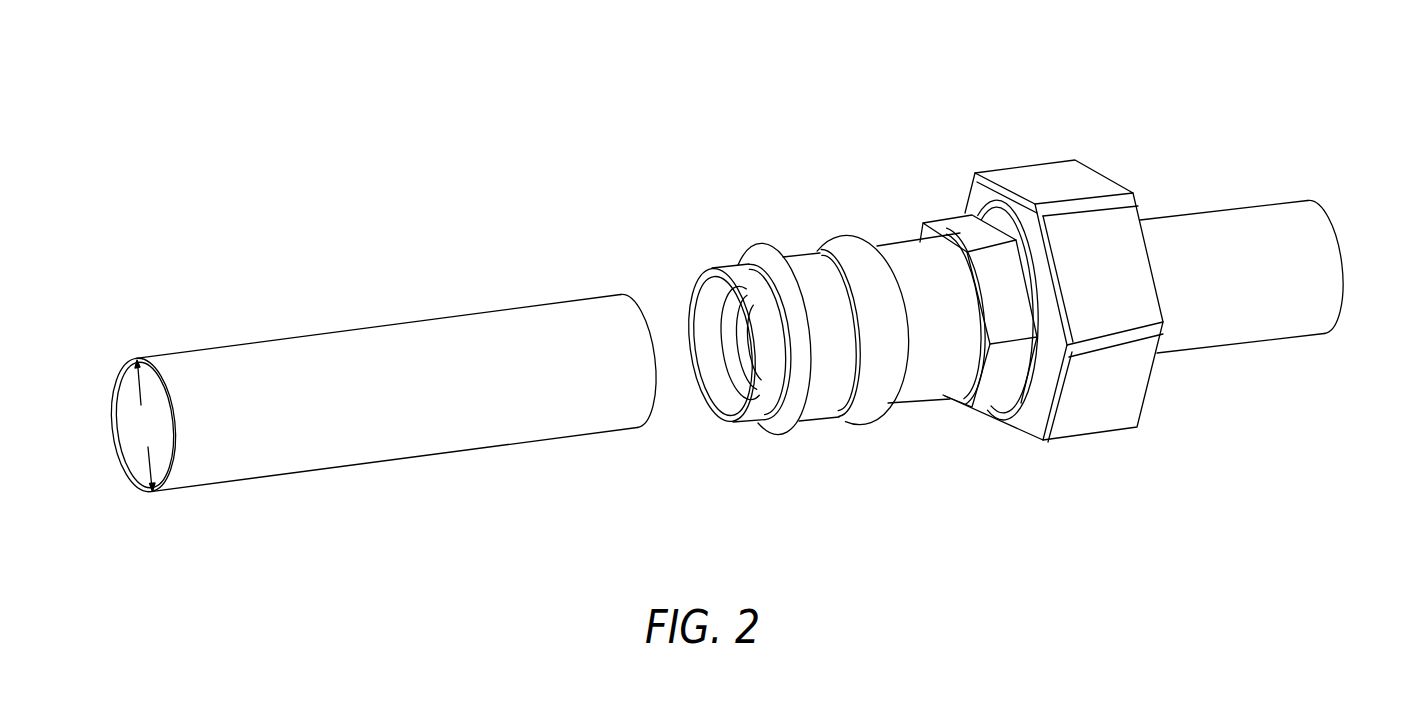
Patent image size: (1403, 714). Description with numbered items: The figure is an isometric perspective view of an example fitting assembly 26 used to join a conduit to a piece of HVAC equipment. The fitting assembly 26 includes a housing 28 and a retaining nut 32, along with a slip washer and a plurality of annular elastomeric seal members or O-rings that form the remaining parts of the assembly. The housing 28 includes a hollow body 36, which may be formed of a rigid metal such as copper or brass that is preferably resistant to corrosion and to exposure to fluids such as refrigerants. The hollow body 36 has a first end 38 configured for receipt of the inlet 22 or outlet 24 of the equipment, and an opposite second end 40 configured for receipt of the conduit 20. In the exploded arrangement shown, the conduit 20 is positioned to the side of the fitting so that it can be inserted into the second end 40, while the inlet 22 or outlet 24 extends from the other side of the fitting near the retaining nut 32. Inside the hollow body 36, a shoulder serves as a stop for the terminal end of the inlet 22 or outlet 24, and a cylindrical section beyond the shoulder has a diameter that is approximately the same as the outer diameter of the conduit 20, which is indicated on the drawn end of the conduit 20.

The conduit 20 is at (415, 459).
The inlet 22 is at (1241, 332).
The outlet 24 is at (1270, 323).
The fitting assembly 26 is at (929, 428).
The housing 28 is at (910, 244).
The retaining nut 32 is at (1070, 180).
The hollow body 36 is at (910, 257).
The first end 38 is at (998, 378).
The second end 40 is at (786, 427).